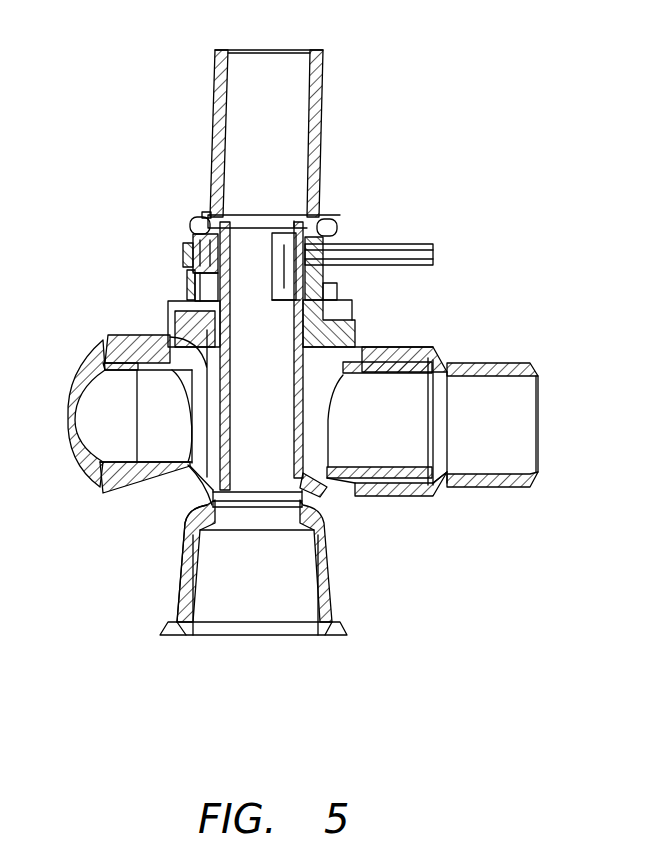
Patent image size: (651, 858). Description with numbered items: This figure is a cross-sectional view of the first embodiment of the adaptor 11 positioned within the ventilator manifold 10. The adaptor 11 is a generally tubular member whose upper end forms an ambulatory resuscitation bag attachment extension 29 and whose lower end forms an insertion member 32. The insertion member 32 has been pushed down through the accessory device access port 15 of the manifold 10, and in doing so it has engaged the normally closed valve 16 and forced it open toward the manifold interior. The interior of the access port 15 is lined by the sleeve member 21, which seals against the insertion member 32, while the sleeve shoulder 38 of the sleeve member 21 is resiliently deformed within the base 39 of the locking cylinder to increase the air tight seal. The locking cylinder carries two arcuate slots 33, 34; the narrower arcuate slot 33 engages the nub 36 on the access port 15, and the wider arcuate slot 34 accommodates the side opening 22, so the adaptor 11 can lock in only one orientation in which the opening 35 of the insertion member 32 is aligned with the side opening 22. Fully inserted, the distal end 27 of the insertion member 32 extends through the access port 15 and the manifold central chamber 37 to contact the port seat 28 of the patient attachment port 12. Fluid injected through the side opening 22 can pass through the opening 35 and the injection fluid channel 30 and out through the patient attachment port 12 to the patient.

The ventilator manifold 10 is at (182, 502).
The adaptor 11 is at (338, 140).
The patient attachment port 12 is at (340, 587).
The accessory device access port 15 is at (347, 296).
The normally closed valve 16 is at (170, 338).
The sleeve member 21 is at (186, 274).
The side opening 22 is at (330, 224).
The distal end 27 is at (322, 484).
The port seat 28 is at (187, 528).
The ambulatory resuscitation bag attachment extension 29 is at (213, 82).
The injection fluid channel 30 is at (345, 279).
The insertion member 32 is at (300, 428).
The arcuate slot 33 is at (190, 233).
The arcuate slot 34 is at (340, 232).
The opening 35 is at (322, 212).
The nub 36 is at (183, 256).
The manifold central chamber 37 is at (188, 478).
The sleeve shoulder 38 is at (207, 214).
The base 39 is at (196, 218).